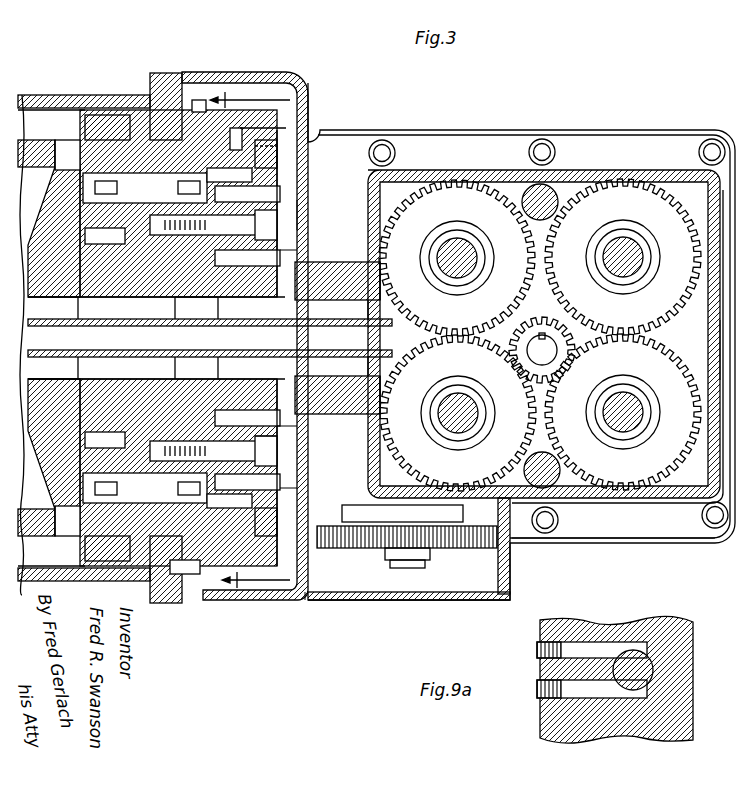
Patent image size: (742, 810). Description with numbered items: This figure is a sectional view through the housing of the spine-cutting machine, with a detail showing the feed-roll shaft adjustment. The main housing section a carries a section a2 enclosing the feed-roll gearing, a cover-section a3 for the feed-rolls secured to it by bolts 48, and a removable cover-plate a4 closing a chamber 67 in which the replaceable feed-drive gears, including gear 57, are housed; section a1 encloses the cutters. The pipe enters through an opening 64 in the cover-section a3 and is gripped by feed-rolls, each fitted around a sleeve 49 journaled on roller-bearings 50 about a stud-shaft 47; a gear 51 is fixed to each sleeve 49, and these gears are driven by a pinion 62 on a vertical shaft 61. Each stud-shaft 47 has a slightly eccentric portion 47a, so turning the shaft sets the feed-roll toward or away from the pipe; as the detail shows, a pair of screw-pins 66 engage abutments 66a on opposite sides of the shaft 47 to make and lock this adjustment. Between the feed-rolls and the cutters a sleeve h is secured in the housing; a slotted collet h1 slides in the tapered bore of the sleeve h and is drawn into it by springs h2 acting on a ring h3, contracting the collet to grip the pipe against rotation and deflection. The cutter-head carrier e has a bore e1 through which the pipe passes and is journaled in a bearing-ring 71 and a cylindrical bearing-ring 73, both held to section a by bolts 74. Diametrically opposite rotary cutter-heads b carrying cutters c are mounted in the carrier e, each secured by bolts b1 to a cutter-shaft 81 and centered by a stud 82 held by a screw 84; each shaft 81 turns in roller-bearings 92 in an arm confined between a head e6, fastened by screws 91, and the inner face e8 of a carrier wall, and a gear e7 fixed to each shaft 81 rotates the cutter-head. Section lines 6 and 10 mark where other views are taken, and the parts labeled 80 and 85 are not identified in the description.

In FIG. 3, the section line 6 is at (128, 95).
In FIG. 3, the cutter-head carrier e is at (150, 112).
In FIG. 3, the gear e7 is at (140, 178).
In FIG. 3, the inner face of carrier wall e8 is at (62, 145).
In FIG. 3, the plate 80 is at (102, 130).
In FIG. 3, the cutter-shaft 81 is at (110, 582).
In FIG. 3, the cylindrical bearing-ring 73 is at (208, 104).
In FIG. 3, the bolts 74 is at (240, 110).
In FIG. 3, the screws 91 is at (246, 132).
In FIG. 3, the dimension 10 is at (250, 335).
In FIG. 3, the head e6 is at (260, 152).
In FIG. 3, the cutters c is at (280, 152).
In FIG. 3, the rotary cutter-head b is at (280, 184).
In FIG. 3, the housing section a1 is at (302, 216).
In FIG. 3, the bolts b1 is at (282, 246).
In FIG. 3, the sleeve h is at (333, 276).
In FIG. 3, the slotted collet h1 is at (382, 294).
In FIG. 3, the springs h2 is at (388, 380).
In FIG. 3, the ring h3 is at (386, 262).
In FIG. 3, the bolts 48 is at (546, 188).
In FIG. 3, the cover-section a3 is at (598, 172).
In FIG. 3, the housing section a2 is at (571, 546).
In FIG. 3, the cover-plate a4 is at (400, 600).
In FIG. 3, the main housing section a is at (521, 341).
In FIG. 3, the sleeve 49 is at (455, 280).
In FIG. 3, the eccentric portion 47a is at (624, 278).
In FIG. 3, the stud-shaft 47 is at (470, 413).
In FIG. 3, the pinion 62 is at (518, 354).
In FIG. 3, the vertical shaft 61 is at (533, 360).
In FIG. 3, the opening 64 is at (716, 350).
In FIG. 3, the gear 51 is at (458, 413).
In FIG. 3, the roller-bearings 50 is at (623, 412).
In FIG. 3, the gear 57 is at (446, 548).
In FIG. 3, the chamber 67 is at (308, 598).
In FIG. 3, the stud 82 is at (282, 432).
In FIG. 3, the screw 84 is at (268, 452).
In FIG. 3, the roller-bearings 92 is at (84, 341).
In FIG. 3, the sleeve 85 is at (216, 402).
In FIG. 3, the bore e1 is at (82, 548).
In FIG. 3, the bearing-ring 71 is at (180, 598).
In FIG. 9A, the screw-pins 66 is at (588, 642).
In FIG. 9A, the abutments 66a is at (640, 652).